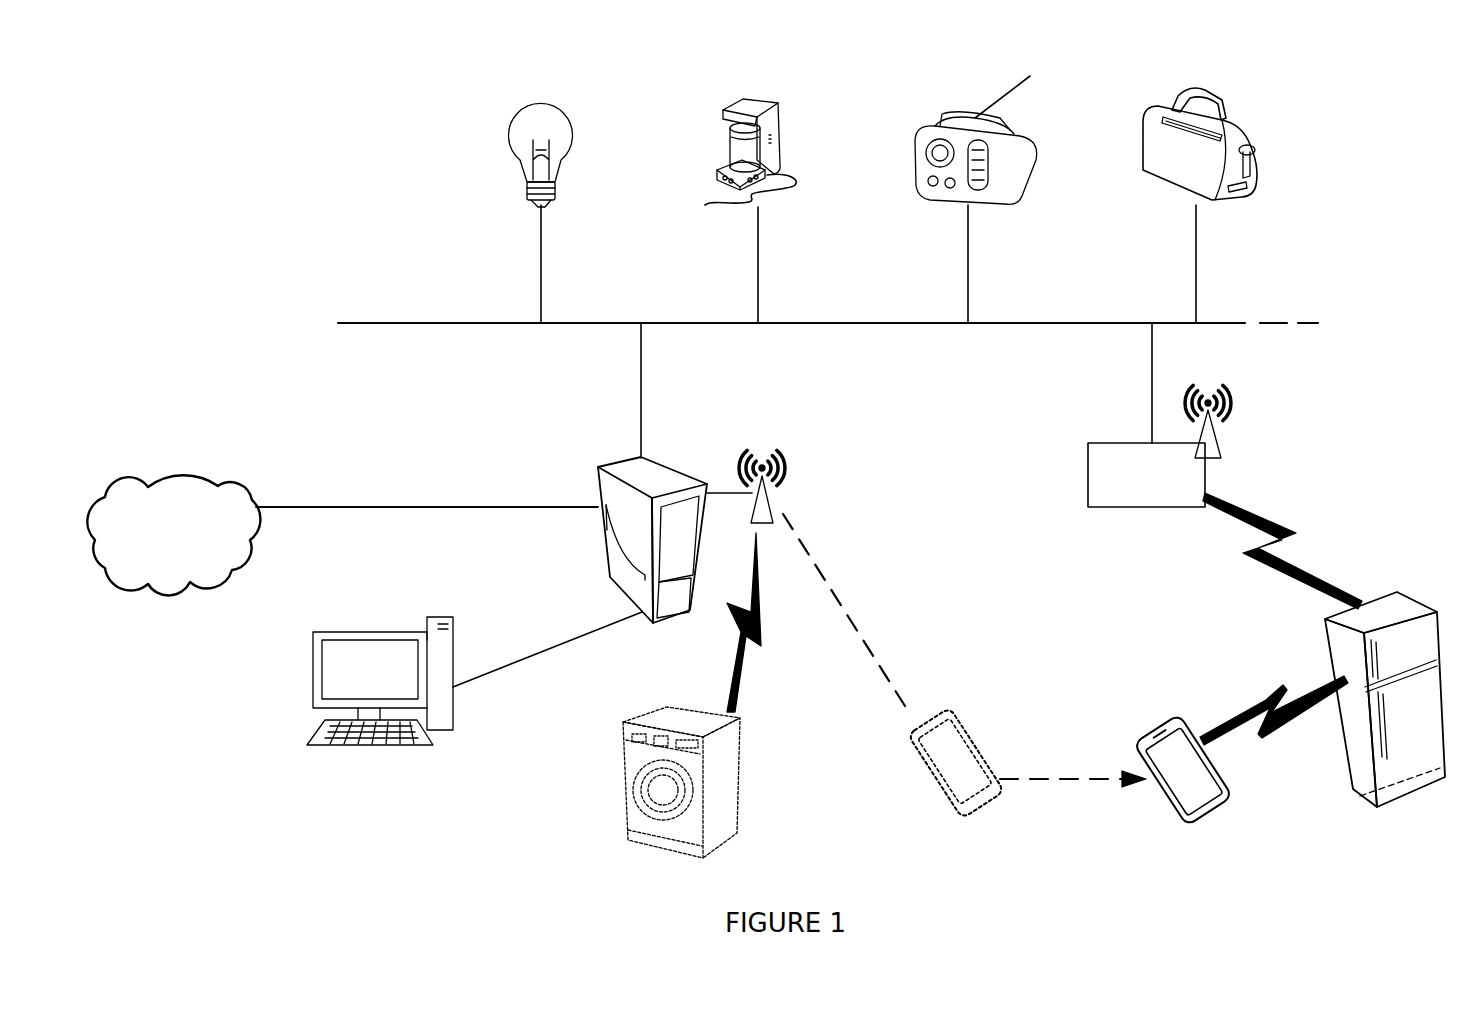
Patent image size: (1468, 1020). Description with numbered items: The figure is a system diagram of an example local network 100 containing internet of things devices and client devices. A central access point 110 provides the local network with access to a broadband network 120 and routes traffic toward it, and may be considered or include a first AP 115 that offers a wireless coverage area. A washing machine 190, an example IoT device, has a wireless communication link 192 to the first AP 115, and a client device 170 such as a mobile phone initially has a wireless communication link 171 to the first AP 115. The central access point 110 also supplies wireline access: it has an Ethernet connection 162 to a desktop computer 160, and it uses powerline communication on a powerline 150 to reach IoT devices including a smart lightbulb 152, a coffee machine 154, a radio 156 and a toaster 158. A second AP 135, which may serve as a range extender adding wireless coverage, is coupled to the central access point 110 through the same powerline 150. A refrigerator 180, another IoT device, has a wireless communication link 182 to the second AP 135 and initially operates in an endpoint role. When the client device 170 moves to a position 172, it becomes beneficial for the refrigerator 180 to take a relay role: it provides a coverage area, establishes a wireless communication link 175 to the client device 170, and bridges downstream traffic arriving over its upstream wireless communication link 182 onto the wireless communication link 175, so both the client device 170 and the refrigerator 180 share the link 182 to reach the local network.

The network 100 is at (188, 30).
The central access point 110 is at (680, 470).
The first AP 115 is at (794, 460).
The broadband network 120 is at (150, 478).
The second AP 135 is at (1108, 443).
The powerline 150 is at (405, 322).
The smart lightbulb 152 is at (508, 128).
The coffee machine 154 is at (720, 158).
The radio 156 is at (916, 128).
The toaster 158 is at (1142, 170).
The desktop computer 160 is at (348, 630).
The Ethernet connection 162 is at (540, 650).
The client device 170 is at (948, 704).
The wireless communication link 171 is at (868, 622).
The position 172 is at (1130, 700).
The wireless communication link 175 is at (1260, 700).
The refrigerator 180 is at (1410, 590).
The wireless communication link 182 is at (1300, 544).
The washing machine 190 is at (688, 706).
The wireless communication link 192 is at (763, 646).